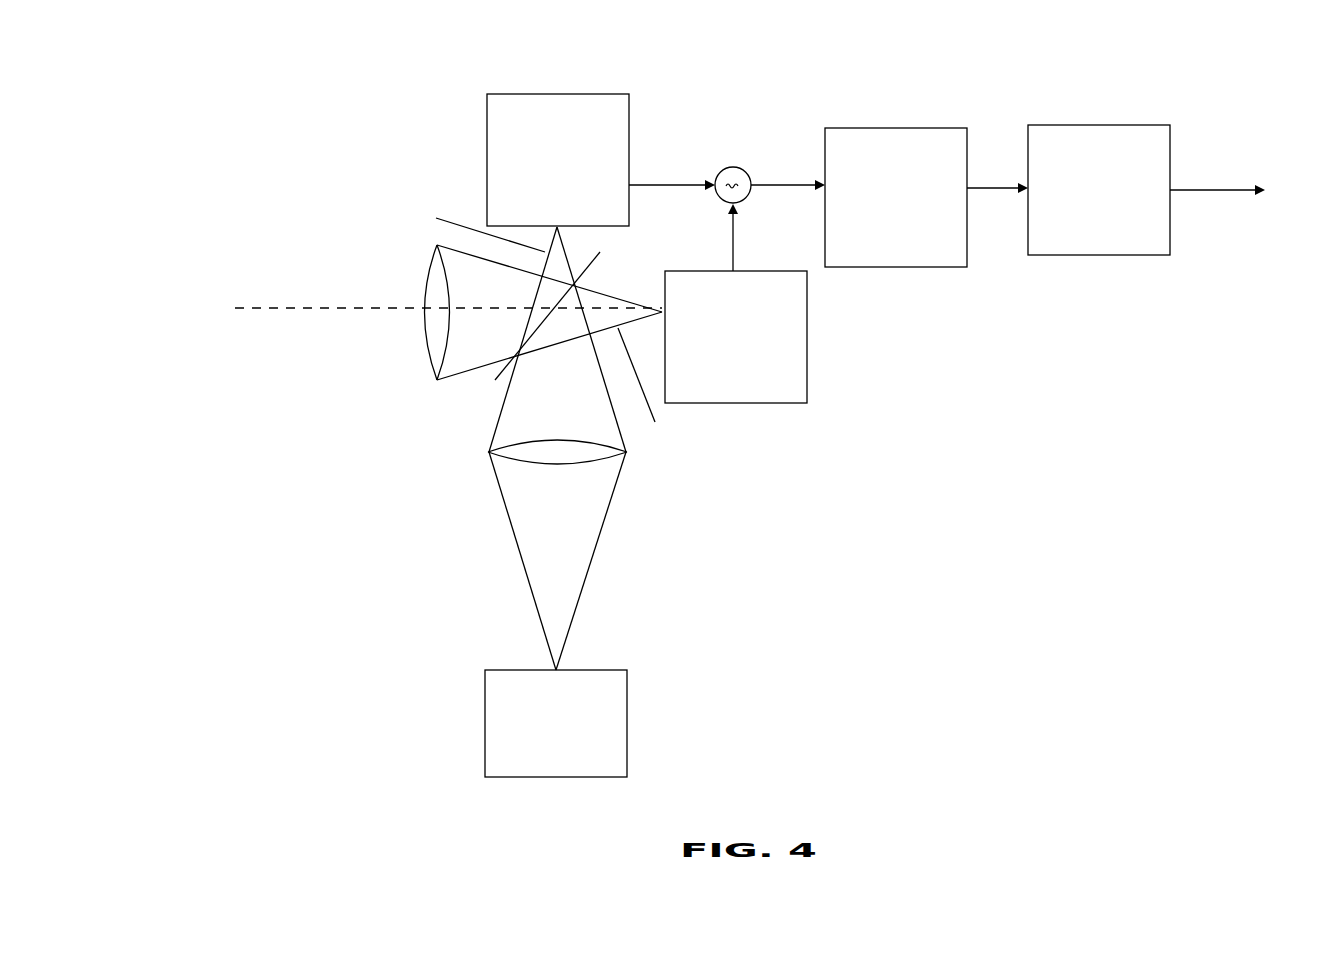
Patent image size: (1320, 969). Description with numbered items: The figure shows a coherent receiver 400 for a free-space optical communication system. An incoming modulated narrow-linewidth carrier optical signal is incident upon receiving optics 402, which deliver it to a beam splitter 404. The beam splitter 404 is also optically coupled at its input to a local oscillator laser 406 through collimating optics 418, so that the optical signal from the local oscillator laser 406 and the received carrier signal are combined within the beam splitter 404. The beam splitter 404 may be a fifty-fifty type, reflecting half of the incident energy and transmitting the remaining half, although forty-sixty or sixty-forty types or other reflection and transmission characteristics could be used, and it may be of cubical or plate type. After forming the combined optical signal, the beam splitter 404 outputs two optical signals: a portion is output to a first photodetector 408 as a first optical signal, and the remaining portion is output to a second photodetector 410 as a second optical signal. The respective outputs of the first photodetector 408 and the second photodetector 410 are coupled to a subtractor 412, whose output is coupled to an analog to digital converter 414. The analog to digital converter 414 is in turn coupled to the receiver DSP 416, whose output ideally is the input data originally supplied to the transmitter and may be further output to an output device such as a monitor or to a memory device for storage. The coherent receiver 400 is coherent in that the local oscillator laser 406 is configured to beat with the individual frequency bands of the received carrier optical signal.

The coherent receiver 400 is at (381, 132).
The receiving optics 402 is at (432, 347).
The beam splitter 404 is at (578, 280).
The local oscillator laser 406 is at (556, 723).
The first photodetector 408 is at (558, 160).
The second photodetector 410 is at (736, 337).
The subtractor 412 is at (733, 164).
The analog to digital converter 414 is at (896, 197).
The receiver DSP 416 is at (1099, 190).
The collimating optics 418 is at (505, 453).